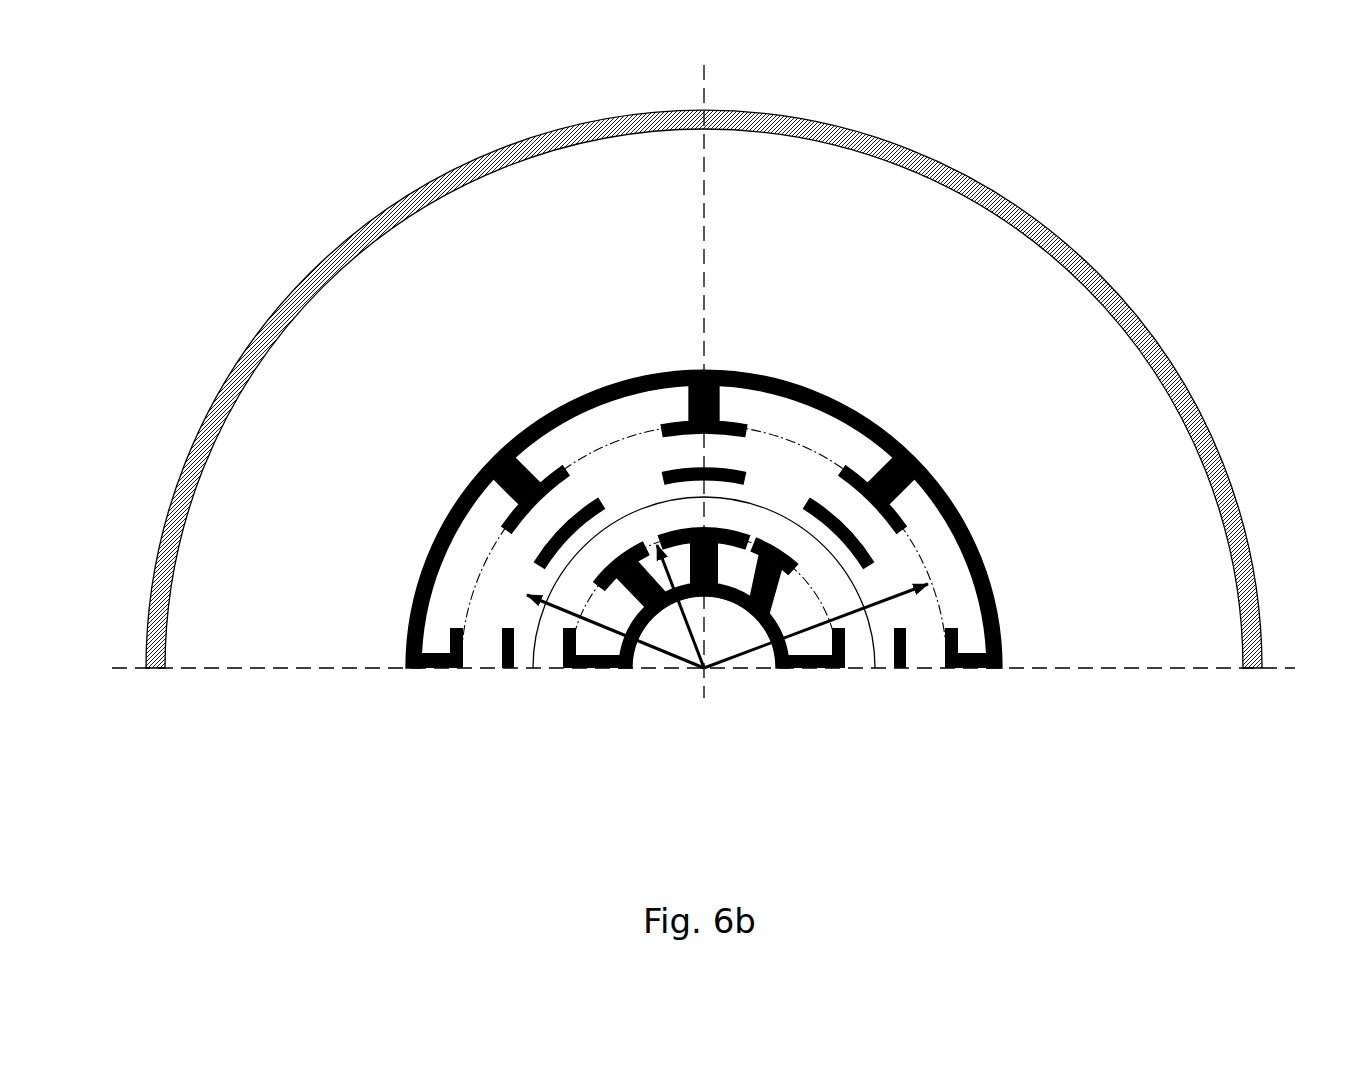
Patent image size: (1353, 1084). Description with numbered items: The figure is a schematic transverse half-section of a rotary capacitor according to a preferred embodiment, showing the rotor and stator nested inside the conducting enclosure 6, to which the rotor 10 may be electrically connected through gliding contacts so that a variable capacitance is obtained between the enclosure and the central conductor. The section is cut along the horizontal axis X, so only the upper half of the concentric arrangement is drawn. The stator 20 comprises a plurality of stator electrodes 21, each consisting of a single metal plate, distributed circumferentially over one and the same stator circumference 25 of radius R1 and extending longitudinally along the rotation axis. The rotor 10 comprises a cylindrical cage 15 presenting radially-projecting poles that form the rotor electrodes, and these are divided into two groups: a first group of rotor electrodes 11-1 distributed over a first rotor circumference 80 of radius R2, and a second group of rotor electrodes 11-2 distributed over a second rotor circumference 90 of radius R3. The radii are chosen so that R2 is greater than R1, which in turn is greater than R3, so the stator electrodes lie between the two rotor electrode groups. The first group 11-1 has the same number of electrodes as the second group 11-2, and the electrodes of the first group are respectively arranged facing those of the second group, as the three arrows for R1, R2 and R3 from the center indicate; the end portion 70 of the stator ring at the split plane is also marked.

The conducting enclosure 6 is at (340, 245).
The rotor 10 is at (383, 612).
The first group of rotor electrodes 11-1 is at (685, 415).
The second group of rotor electrodes 11-2 is at (560, 480).
The cylindrical cage 15 is at (783, 642).
The stator 20 is at (748, 497).
The stator electrode 21 is at (543, 558).
The stator circumference 25 is at (527, 573).
The intermediate ring end portion 70 is at (899, 628).
The first rotor circumference 80 is at (930, 570).
The second rotor circumference 90 is at (757, 538).
The radius of the stator circumference R1 is at (680, 630).
The radius of the first rotor circumference R2 is at (757, 650).
The radius of the second rotor circumference R3 is at (688, 605).
The split plane axis X is at (1068, 668).